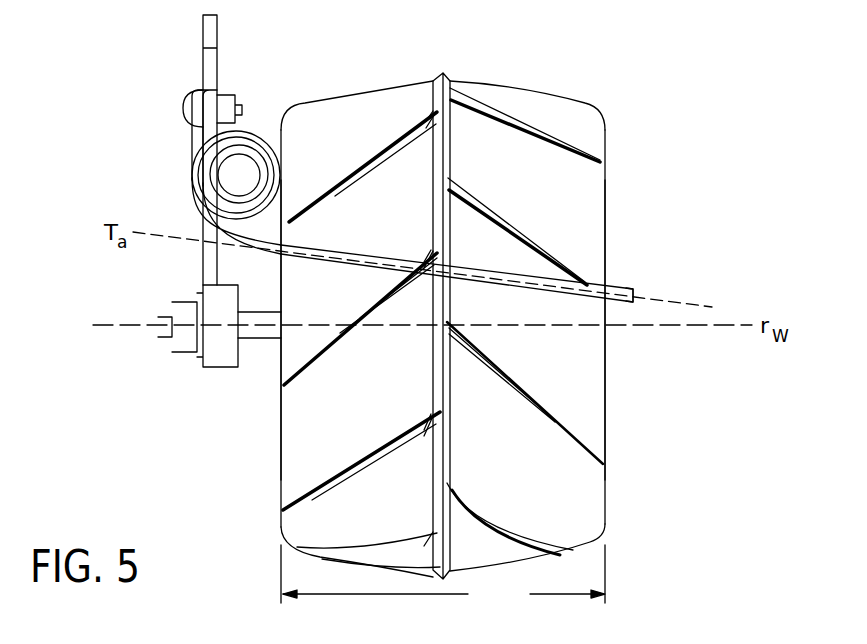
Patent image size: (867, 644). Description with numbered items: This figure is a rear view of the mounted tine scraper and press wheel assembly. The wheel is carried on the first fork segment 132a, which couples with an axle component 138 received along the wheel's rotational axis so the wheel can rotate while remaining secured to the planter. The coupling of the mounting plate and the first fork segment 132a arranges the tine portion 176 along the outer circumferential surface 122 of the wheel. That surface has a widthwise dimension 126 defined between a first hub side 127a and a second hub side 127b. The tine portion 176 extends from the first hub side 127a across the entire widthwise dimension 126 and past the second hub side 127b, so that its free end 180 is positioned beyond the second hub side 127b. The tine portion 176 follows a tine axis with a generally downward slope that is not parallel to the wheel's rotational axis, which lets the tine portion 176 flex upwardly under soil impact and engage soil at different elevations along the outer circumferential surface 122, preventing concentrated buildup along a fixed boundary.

The outer circumferential surface 122 is at (341, 115).
The widthwise dimension 126 is at (443, 577).
The first hub side 127a is at (282, 502).
The second hub side 127b is at (605, 500).
The first fork segment 132a is at (225, 368).
The axle component 138 is at (257, 340).
The tine portion 176 is at (474, 264).
The free end 180 is at (650, 297).